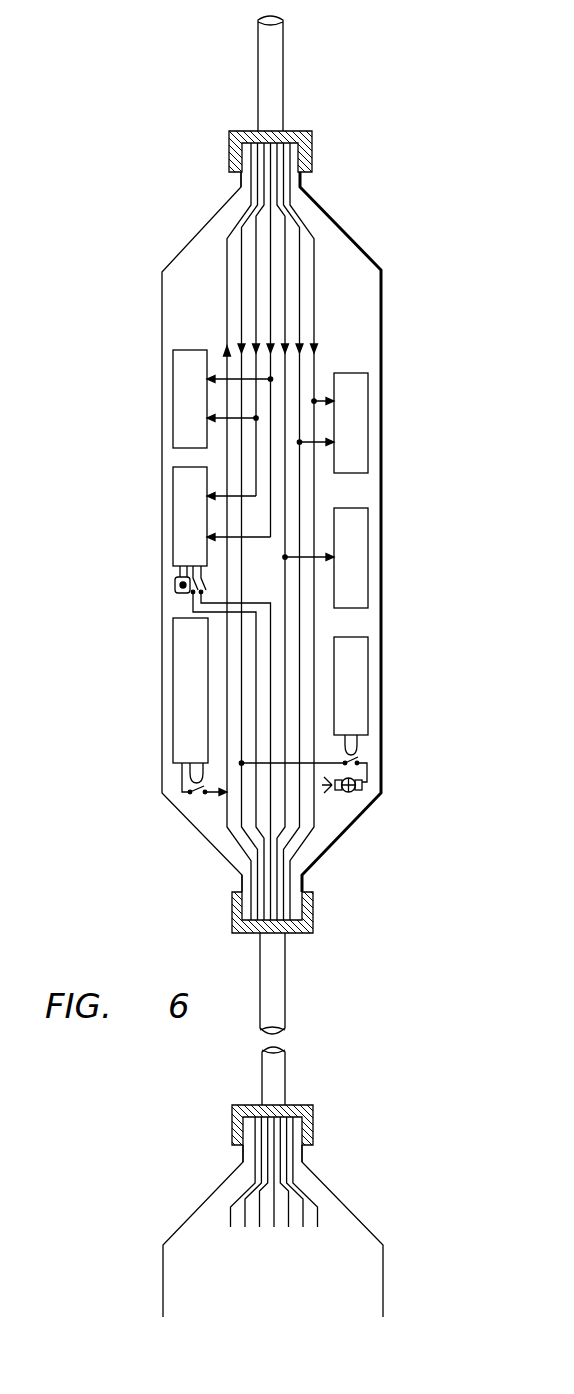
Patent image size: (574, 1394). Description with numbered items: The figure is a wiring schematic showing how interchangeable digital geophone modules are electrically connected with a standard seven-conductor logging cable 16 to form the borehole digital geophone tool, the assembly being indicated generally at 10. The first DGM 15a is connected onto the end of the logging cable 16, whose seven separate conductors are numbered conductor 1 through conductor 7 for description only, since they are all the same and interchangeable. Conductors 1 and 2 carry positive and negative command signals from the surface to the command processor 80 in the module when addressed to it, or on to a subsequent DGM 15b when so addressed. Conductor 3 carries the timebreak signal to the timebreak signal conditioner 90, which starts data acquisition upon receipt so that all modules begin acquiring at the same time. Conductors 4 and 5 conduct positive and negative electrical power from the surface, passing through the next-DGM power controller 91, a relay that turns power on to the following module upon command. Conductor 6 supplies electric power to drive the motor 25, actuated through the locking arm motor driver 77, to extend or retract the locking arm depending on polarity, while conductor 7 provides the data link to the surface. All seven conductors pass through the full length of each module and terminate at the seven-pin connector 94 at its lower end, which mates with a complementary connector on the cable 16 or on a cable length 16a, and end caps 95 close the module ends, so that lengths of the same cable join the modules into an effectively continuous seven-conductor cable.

The conductor 1 is at (306, 228).
The conductor 2 is at (300, 263).
The conductor 3 is at (285, 294).
The conductor 4 is at (271, 307).
The conductor 5 is at (256, 283).
The conductor 6 is at (242, 297).
The conductor 7 is at (227, 317).
The apparatus 10 is at (183, 192).
The first DGM 15a is at (162, 453).
The subsequent DGM 15b is at (363, 1220).
The logging cable 16 is at (278, 60).
The cable length 16a is at (278, 973).
The motor 25 is at (347, 793).
The locking arm motor driver 77 is at (368, 683).
The command processor 80 is at (172, 393).
The timebreak signal conditioner 90 is at (368, 550).
The next DGM power controller 91 is at (173, 512).
The connector 94 is at (294, 180).
The end cap 95 is at (303, 145).